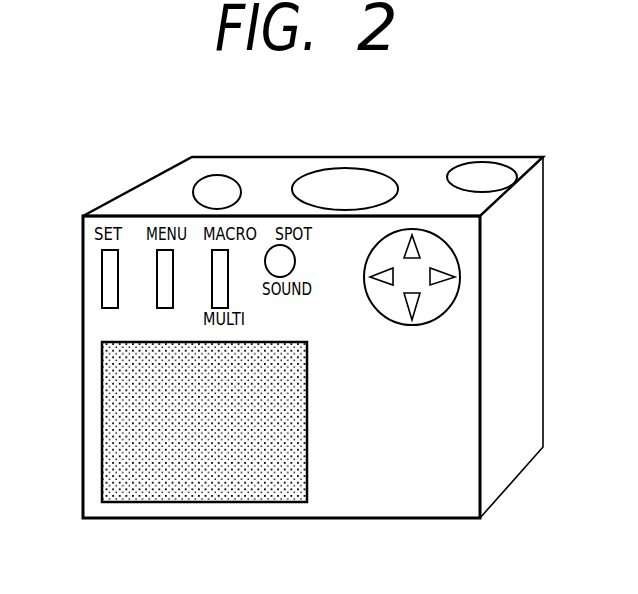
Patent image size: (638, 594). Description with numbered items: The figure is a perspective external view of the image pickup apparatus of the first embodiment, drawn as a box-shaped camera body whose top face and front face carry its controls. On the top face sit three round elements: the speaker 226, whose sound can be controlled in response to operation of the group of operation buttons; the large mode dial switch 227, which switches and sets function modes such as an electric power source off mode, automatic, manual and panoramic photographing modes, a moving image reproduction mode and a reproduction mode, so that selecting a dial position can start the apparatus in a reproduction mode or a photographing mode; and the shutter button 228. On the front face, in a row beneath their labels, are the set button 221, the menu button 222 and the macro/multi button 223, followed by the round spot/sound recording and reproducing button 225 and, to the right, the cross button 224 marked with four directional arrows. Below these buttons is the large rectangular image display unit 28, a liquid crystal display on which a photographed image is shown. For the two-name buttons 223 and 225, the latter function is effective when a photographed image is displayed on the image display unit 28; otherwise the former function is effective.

The image display unit 28 is at (118, 472).
The set button 221 is at (110, 273).
The menu button 222 is at (160, 272).
The macro/multi button 223 is at (220, 290).
The cross button 224 is at (433, 252).
The spot/sound recording and reproducing button 225 is at (290, 260).
The speaker 226 is at (235, 178).
The mode dial switch 227 is at (353, 187).
The shutter button 228 is at (485, 170).